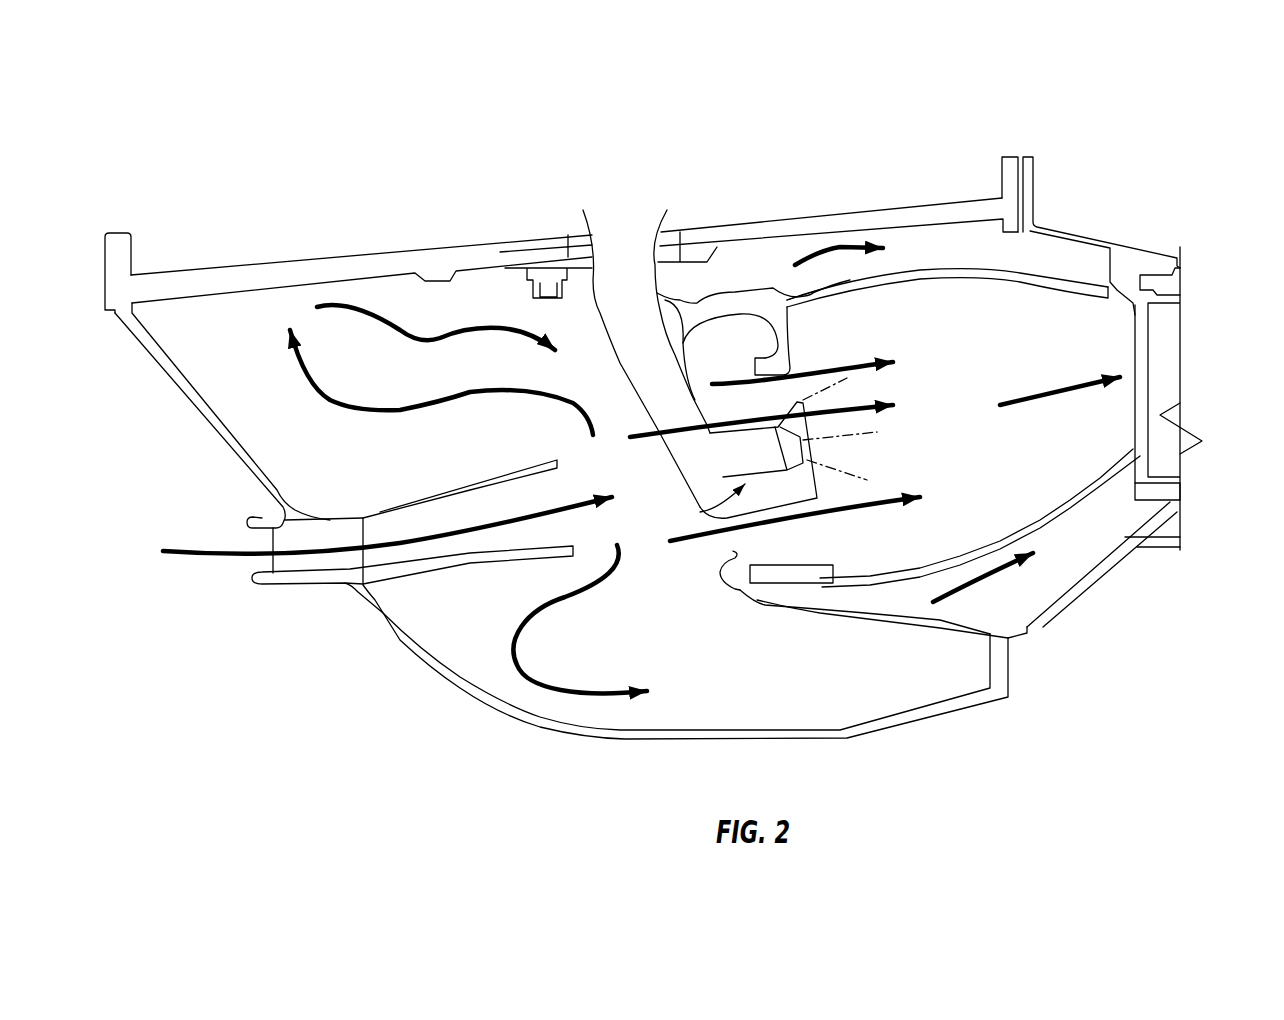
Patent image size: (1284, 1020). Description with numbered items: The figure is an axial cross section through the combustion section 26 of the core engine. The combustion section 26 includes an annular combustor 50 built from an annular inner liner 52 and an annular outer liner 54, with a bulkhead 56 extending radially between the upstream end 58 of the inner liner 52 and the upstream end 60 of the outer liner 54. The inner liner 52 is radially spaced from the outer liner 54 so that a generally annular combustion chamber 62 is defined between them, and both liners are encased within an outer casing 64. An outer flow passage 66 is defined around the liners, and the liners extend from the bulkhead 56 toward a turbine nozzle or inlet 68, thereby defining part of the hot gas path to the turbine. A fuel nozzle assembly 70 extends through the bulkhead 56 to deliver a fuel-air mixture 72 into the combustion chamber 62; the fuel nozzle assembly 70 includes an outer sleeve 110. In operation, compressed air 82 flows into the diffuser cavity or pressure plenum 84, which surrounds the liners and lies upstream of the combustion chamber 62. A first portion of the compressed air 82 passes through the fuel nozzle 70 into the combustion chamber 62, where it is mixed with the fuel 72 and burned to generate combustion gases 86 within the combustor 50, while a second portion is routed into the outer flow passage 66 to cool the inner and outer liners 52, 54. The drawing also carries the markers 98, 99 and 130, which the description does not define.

The combustion section 26 is at (820, 138).
The combustor 50 is at (897, 262).
The annular inner liner 52 is at (985, 542).
The annular outer liner 54 is at (848, 290).
The bulkhead 56 is at (713, 580).
The upstream end of the inner liner 58 is at (793, 600).
The upstream end of the outer liner 60 is at (740, 283).
The combustion chamber 62 is at (973, 409).
The outer casing 64 is at (968, 188).
The outer flow passage 66 is at (1033, 253).
The turbine nozzle or inlet 68 is at (1162, 362).
The fuel nozzle assembly 70 is at (753, 461).
The fuel-air mixture 72 is at (850, 470).
The compressed air 82 is at (403, 546).
The pressure plenum 84 is at (443, 313).
The combustion gases 86 is at (1050, 385).
The aft direction 98 is at (1226, 492).
The forward direction 99 is at (100, 487).
The outer sleeve 110 is at (700, 509).
The vane trailing edge 130 is at (760, 410).